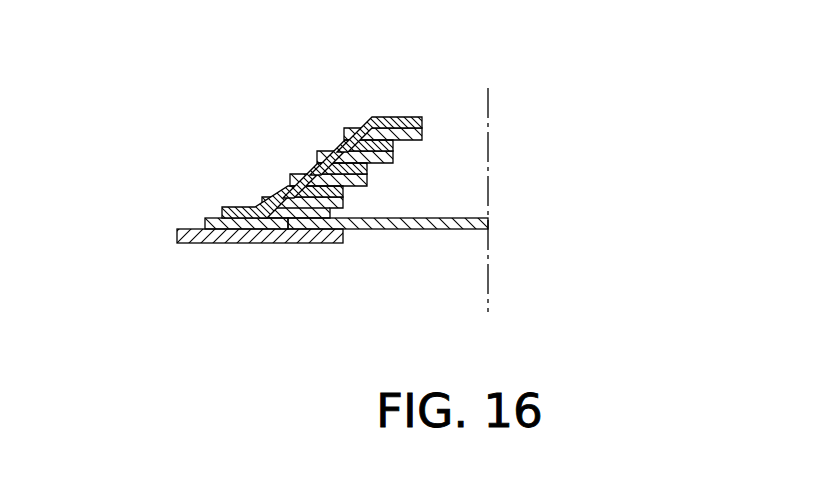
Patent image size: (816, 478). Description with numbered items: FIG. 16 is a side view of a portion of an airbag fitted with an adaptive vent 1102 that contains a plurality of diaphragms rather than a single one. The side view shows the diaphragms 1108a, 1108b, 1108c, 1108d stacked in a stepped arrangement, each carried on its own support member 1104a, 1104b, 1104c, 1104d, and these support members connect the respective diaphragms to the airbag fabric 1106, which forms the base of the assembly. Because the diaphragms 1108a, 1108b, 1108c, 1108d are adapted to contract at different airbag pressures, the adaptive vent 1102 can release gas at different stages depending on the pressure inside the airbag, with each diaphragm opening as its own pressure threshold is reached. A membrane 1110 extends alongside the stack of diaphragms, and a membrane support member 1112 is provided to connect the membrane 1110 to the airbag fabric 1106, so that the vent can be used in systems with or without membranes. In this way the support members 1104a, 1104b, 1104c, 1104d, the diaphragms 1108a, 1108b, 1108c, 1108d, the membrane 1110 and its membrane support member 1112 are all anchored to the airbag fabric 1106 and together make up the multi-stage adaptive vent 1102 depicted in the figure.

The adaptive vent 1102 is at (150, 205).
The support member 1104a is at (367, 117).
The support member 1104b is at (336, 144).
The support member 1104c is at (304, 168).
The support member 1104d is at (277, 206).
The diaphragm 1108a is at (422, 132).
The diaphragm 1108b is at (394, 152).
The diaphragm 1108c is at (368, 182).
The diaphragm 1108d is at (343, 207).
The airbag fabric 1106 is at (204, 236).
The membrane 1110 is at (419, 230).
The membrane support member 1112 is at (266, 226).